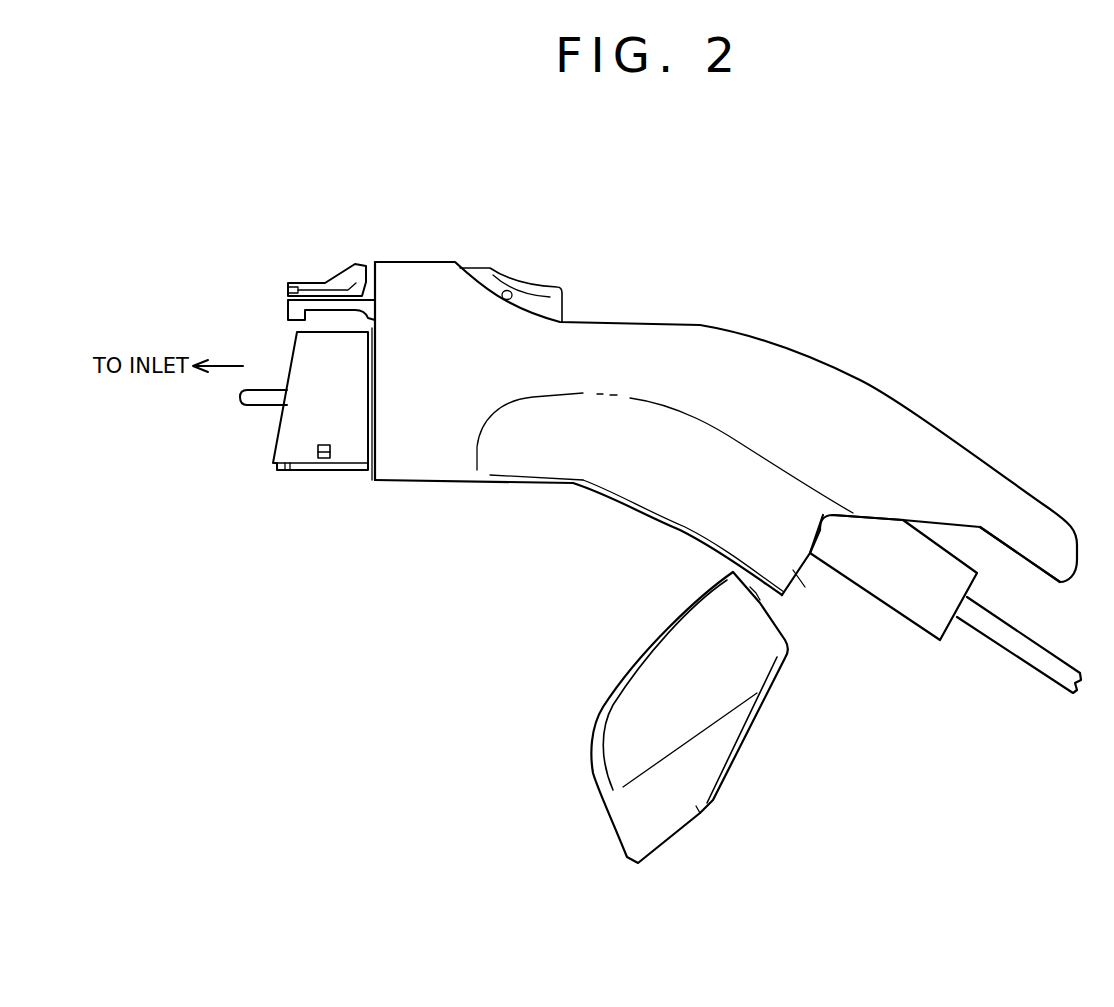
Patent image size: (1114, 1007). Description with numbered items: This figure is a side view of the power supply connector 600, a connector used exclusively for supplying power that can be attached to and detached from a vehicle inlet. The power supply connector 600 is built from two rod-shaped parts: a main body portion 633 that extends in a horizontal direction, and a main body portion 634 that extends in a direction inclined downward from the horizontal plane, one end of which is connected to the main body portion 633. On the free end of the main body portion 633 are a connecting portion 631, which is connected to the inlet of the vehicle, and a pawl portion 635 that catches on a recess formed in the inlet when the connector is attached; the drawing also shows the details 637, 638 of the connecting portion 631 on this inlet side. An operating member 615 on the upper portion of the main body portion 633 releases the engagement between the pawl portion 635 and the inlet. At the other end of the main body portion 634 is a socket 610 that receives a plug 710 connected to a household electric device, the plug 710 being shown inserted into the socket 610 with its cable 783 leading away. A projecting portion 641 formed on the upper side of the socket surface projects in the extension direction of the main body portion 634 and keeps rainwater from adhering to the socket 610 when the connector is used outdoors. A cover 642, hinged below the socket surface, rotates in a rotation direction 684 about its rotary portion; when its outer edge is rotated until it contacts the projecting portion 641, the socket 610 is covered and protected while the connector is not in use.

The power supply connector 600 is at (815, 310).
The socket 610 is at (818, 530).
The operating member 615 is at (528, 303).
The connecting portion 631 is at (370, 530).
The main body portion 633 is at (415, 465).
The main body portion 634 is at (610, 473).
The pawl portion 635 is at (340, 295).
The terminal pin 637 is at (255, 407).
The terminal 638 is at (333, 472).
The projecting portion 641 is at (1030, 525).
The cover 642 is at (705, 762).
The rotation direction 684 is at (920, 652).
The plug 710 is at (895, 585).
The cable 783 is at (1020, 648).